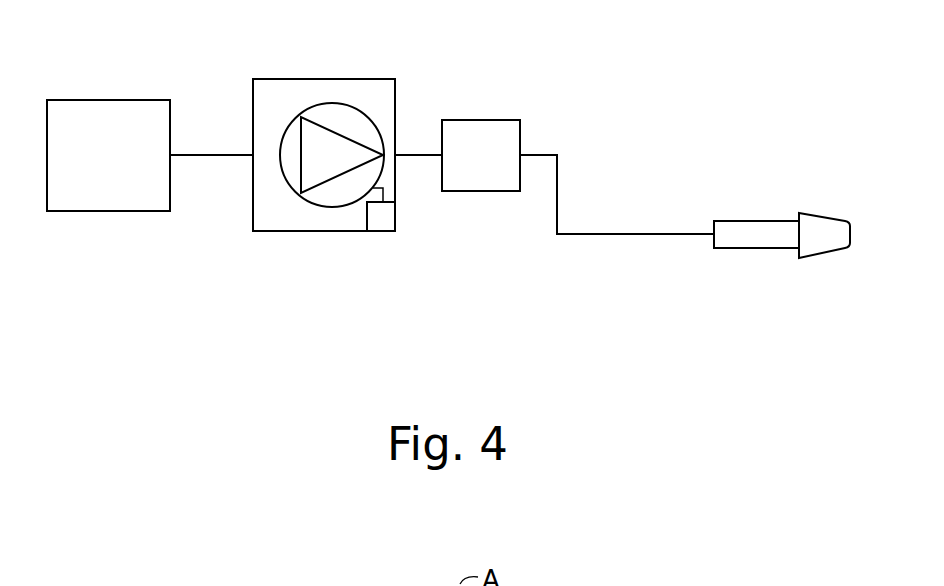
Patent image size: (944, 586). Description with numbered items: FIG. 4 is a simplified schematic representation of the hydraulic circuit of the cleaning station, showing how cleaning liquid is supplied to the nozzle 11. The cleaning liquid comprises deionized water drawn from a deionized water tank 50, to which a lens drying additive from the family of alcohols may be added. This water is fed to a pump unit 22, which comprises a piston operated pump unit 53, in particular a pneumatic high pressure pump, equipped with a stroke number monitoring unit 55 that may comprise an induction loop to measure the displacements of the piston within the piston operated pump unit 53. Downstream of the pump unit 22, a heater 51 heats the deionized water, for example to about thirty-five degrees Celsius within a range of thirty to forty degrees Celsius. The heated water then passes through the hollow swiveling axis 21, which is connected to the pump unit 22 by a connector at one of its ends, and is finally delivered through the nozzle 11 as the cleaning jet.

The deionized water tank 50 is at (96, 100).
The pump unit 22 is at (397, 79).
The piston operated pump unit 53 is at (332, 207).
The stroke number monitoring unit 55 is at (363, 222).
The heater 51 is at (520, 120).
The swiveling axis 21 is at (677, 234).
The nozzle 11 is at (742, 248).